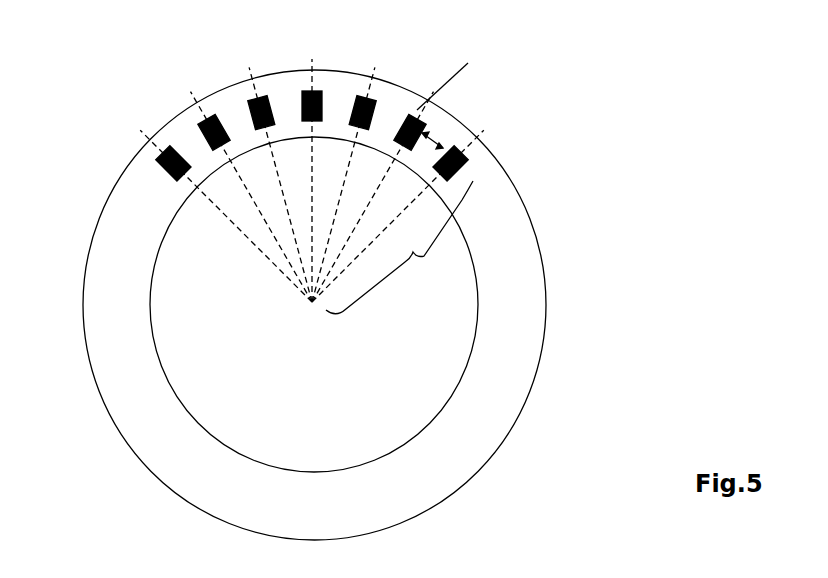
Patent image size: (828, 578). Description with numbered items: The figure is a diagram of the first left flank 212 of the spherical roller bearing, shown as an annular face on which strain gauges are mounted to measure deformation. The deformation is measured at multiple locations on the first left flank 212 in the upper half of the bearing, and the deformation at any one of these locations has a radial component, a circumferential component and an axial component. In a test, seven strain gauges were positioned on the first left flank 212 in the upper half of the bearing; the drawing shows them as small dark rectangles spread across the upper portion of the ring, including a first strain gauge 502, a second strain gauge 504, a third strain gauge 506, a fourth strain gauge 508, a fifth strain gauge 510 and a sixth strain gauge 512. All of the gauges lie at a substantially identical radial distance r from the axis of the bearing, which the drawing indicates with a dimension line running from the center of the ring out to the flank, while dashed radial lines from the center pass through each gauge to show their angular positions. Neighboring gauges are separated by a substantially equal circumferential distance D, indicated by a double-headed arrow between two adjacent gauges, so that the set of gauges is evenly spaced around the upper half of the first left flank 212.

The first left flank 212 is at (585, 356).
The first strain gauge 502 is at (152, 163).
The second strain gauge 504 is at (203, 125).
The third strain gauge 506 is at (255, 93).
The fourth strain gauge 508 is at (320, 92).
The fifth strain gauge 510 is at (365, 97).
The sixth strain gauge 512 is at (470, 153).
The circumferential distance D is at (436, 131).
The radial distance r is at (399, 247).